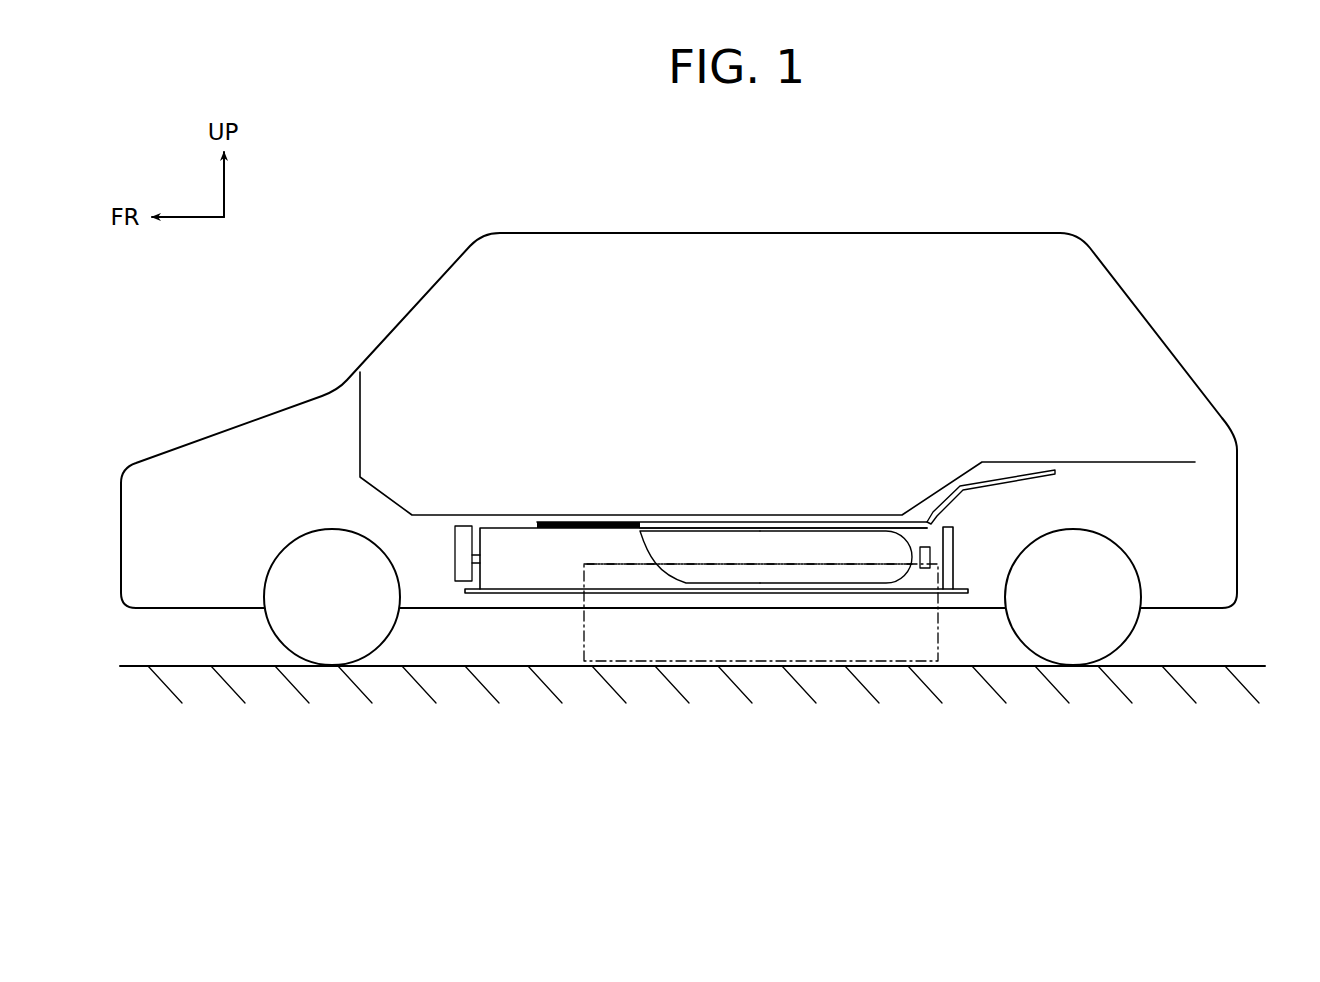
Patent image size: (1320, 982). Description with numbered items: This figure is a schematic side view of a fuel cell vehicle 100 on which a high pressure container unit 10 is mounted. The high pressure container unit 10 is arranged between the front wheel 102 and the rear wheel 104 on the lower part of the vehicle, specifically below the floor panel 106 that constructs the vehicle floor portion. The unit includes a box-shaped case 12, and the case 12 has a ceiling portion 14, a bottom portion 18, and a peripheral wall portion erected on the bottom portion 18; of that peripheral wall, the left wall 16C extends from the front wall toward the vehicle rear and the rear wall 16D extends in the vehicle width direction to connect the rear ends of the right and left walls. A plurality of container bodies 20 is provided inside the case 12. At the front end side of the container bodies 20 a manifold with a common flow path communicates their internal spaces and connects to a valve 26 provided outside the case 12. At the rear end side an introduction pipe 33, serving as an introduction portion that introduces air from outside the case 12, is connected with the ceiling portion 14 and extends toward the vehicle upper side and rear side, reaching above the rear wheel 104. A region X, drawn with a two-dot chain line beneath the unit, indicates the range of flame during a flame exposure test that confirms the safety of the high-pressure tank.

The vehicle 100 is at (368, 260).
The front wheel 102 is at (268, 612).
The rear wheel 104 is at (1032, 664).
The floor panel 106 is at (541, 514).
The high pressure container unit 10 is at (791, 563).
The case 12 is at (680, 510).
The ceiling portion 14 is at (774, 514).
The left wall 16C is at (641, 590).
The rear wall 16D is at (955, 543).
The bottom portion 18 is at (533, 594).
The container body 20 is at (865, 524).
The valve 26 is at (445, 524).
The introduction pipe 33 is at (1030, 468).
The region X is at (801, 664).